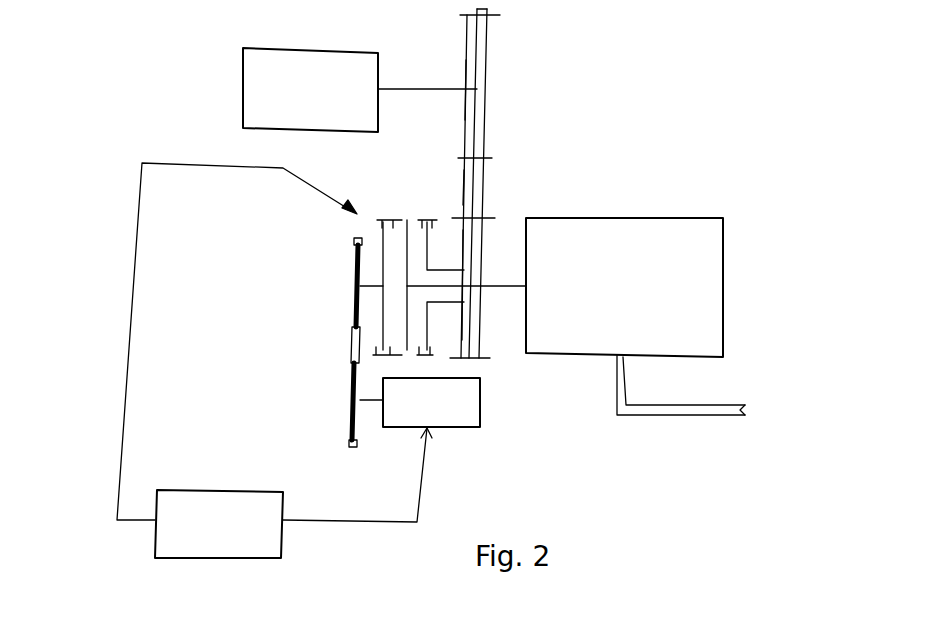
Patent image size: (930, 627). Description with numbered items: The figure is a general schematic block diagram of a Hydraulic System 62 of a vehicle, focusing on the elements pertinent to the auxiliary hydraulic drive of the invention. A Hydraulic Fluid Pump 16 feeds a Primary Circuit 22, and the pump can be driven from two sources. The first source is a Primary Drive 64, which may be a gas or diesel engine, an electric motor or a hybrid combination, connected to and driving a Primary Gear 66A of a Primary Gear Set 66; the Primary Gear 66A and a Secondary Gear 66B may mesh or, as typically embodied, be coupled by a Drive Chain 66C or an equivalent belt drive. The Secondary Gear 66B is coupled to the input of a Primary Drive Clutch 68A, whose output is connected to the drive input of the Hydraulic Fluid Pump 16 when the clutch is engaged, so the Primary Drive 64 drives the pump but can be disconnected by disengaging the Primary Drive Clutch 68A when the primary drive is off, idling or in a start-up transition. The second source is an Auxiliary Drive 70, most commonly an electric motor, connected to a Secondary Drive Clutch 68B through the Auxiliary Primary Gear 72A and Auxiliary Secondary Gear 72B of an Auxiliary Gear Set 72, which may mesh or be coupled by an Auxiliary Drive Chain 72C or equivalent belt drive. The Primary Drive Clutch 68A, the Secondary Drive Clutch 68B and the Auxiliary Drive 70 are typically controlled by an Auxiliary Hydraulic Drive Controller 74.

The hydraulic fluid pump 16 is at (717, 197).
The primary circuit 22 is at (716, 378).
The hydraulic system 62 is at (641, 465).
The primary drive 64 is at (243, 80).
The primary gear set 66 is at (555, 122).
The primary gear 66A is at (489, 72).
The secondary gear 66B is at (493, 245).
The drive chain 66C is at (482, 188).
The primary drive clutch 68A is at (427, 210).
The secondary drive clutch 68B is at (385, 210).
The auxiliary drive 70 is at (483, 407).
The auxiliary gear set 72 is at (277, 345).
The auxiliary primary gear 72A is at (352, 414).
The auxiliary secondary gear 72B is at (355, 261).
The auxiliary drive chain 72C is at (352, 352).
The auxiliary hydraulic drive controller 74 is at (228, 560).